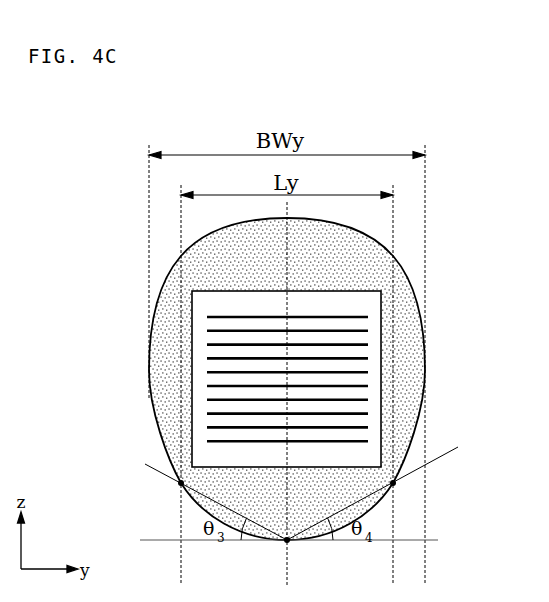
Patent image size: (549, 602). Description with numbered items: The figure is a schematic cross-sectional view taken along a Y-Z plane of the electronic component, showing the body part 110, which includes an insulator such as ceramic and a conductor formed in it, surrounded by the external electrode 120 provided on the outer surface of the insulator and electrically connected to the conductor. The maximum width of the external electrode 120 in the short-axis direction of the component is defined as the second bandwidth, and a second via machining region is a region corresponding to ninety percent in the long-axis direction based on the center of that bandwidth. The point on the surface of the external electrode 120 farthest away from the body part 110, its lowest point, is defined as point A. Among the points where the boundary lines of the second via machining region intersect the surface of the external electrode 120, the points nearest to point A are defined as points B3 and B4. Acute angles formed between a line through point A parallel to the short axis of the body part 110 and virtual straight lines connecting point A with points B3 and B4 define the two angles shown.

The external electrode 120 is at (163, 397).
The body part 110 is at (370, 382).
The point A is at (286, 553).
The point B3 is at (170, 492).
The point B4 is at (406, 494).